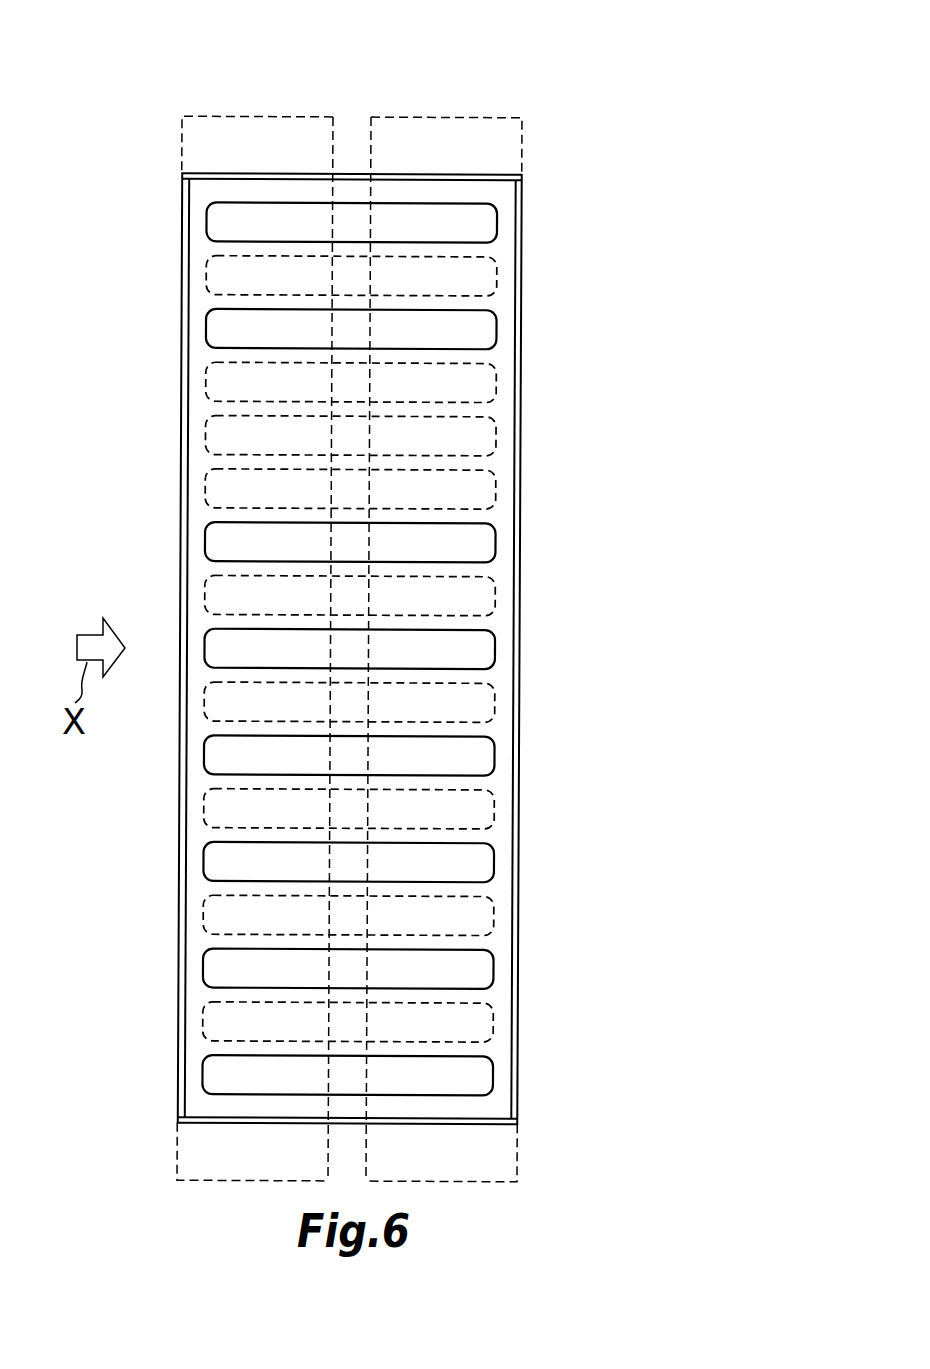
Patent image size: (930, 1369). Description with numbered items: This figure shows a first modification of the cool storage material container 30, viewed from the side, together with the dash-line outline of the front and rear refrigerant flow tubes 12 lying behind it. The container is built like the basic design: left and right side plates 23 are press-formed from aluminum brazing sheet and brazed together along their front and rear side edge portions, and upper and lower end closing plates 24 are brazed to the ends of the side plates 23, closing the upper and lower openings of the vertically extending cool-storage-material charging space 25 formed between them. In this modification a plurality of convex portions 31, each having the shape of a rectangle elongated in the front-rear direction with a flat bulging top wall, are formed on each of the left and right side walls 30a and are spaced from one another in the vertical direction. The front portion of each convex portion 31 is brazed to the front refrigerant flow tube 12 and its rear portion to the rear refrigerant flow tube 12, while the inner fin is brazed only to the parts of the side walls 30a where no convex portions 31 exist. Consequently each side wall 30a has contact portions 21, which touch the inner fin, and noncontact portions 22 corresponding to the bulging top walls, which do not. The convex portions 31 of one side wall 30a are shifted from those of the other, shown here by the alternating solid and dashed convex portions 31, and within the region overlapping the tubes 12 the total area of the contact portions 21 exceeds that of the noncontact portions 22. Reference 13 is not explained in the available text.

The refrigerant flow tube 12 is at (388, 117).
The electrode plate outline 13 is at (181, 122).
The contact portion 21 is at (490, 1100).
The noncontact portion 22 is at (482, 862).
The side plate 23 is at (193, 977).
The end closing plate 24 is at (506, 174).
The cool-storage-material charging space 25 is at (521, 213).
The cool storage material container 30 is at (386, 646).
The side wall 30a is at (480, 386).
The convex portion 31 is at (223, 331).